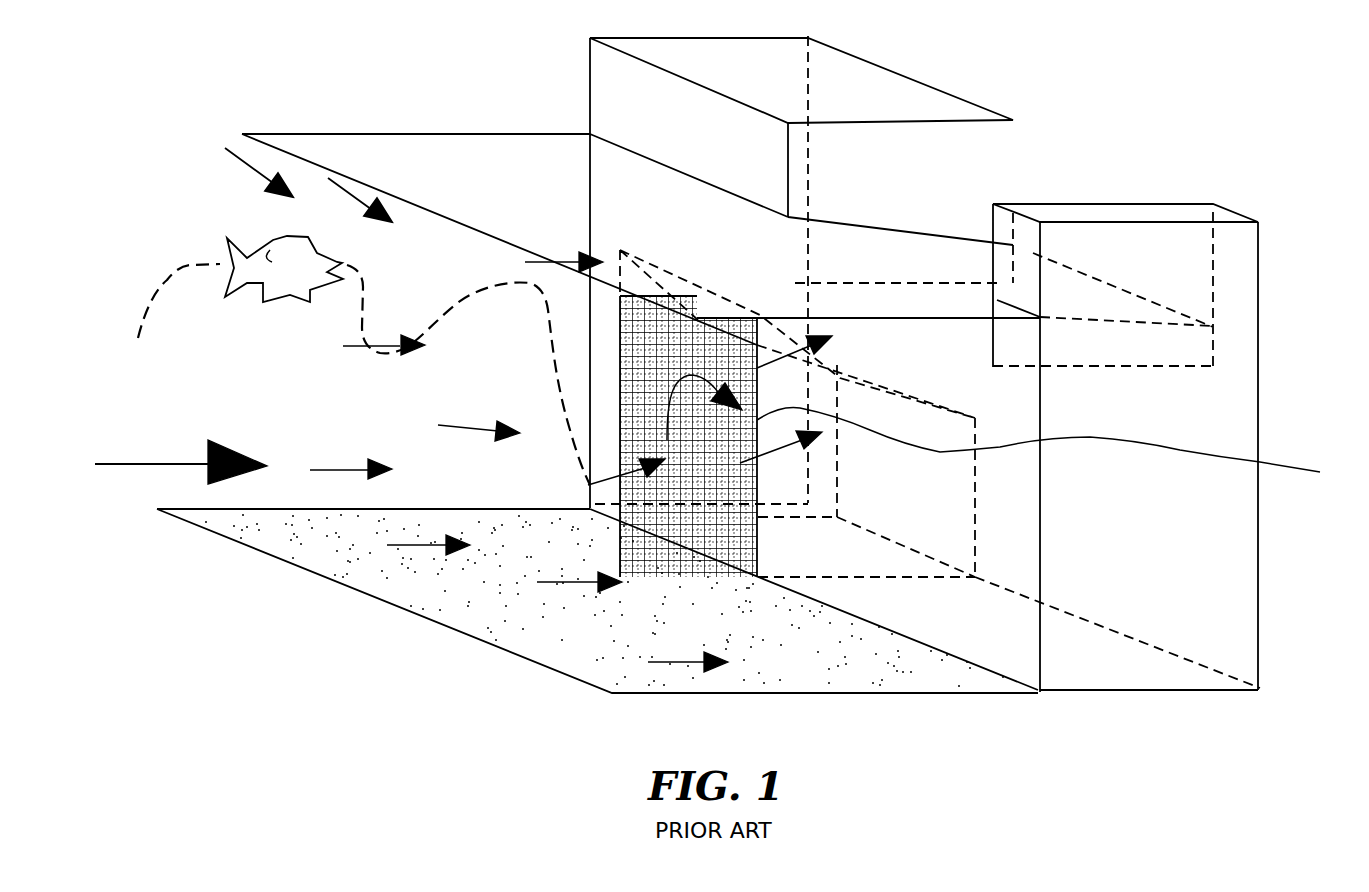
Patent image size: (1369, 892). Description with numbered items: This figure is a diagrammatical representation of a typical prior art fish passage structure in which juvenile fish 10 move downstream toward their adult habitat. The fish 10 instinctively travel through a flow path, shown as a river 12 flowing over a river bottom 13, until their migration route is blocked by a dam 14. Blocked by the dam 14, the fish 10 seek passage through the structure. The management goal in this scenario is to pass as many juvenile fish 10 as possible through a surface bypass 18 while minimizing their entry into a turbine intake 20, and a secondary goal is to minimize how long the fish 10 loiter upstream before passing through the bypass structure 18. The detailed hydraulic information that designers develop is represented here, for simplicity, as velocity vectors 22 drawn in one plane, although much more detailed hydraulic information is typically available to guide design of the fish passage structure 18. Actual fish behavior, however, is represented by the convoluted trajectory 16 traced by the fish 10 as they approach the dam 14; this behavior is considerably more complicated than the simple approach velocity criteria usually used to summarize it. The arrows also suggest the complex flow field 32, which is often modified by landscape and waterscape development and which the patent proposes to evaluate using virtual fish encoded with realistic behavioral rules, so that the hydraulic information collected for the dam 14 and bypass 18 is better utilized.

The juvenile fish 10 is at (282, 255).
The river 12 is at (513, 182).
The river bottom 13 is at (843, 670).
The dam 14 is at (1207, 617).
The convoluted trajectory 16 is at (168, 277).
The surface bypass 18 is at (932, 267).
The turbine intake 20 is at (1059, 451).
The velocity vectors 22 is at (332, 470).
The flow field 32 is at (137, 455).